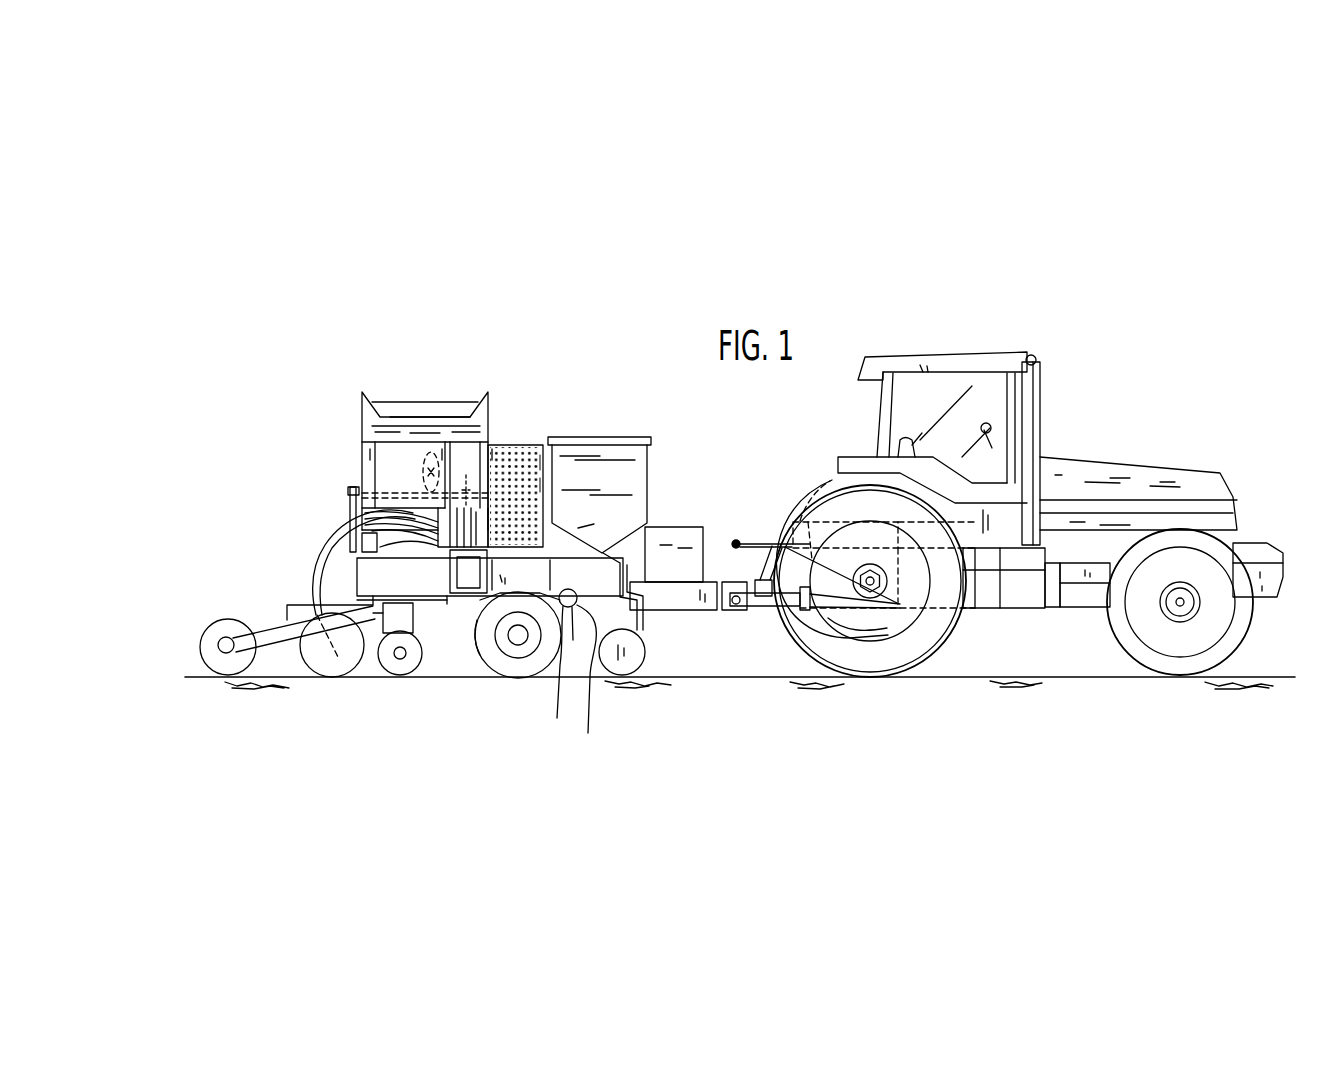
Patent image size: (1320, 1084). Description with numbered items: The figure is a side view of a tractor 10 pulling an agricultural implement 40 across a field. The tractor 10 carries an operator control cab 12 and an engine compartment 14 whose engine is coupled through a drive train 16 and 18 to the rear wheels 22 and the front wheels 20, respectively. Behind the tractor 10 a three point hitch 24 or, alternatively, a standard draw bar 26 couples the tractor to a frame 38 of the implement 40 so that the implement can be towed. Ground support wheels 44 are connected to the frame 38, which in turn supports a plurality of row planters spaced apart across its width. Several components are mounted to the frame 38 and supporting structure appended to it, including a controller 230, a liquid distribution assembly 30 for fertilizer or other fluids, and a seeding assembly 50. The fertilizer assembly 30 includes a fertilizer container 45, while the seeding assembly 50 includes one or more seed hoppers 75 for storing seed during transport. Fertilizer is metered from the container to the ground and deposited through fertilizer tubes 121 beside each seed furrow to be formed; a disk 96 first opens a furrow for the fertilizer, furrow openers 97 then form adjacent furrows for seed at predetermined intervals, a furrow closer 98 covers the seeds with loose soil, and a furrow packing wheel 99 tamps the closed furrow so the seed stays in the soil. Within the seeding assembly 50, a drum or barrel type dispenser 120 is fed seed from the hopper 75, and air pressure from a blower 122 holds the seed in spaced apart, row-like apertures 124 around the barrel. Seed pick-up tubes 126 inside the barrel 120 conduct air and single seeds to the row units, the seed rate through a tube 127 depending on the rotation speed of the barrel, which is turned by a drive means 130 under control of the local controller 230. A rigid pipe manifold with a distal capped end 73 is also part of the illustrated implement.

The tractor 10 is at (1072, 453).
The operator control cab 12 is at (960, 358).
The engine compartment 14 is at (1118, 525).
The drive train 16 is at (897, 557).
The drive train 18 is at (1082, 605).
The front wheels 20 is at (1245, 628).
The rear wheels 22 is at (935, 633).
The three point hitch 24 is at (757, 543).
The draw bar 26 is at (815, 618).
The liquid distribution assembly 30 is at (615, 414).
The frame 38 is at (463, 594).
The agricultural implement 40 is at (398, 390).
The ground support wheels 44 is at (484, 640).
The fertilizer container 45 is at (618, 447).
The seeding assembly 50 is at (462, 397).
The distal capped end 73 is at (594, 686).
The seed hopper 75 is at (433, 410).
The disk 96 is at (645, 655).
The furrow openers 97 is at (403, 664).
The furrow closer 98 is at (330, 670).
The furrow packing wheel 99 is at (208, 633).
The barrel type dispenser 120 is at (505, 444).
The fertilizer tubes 121 is at (553, 668).
The blower 122 is at (420, 485).
The apertures 124 is at (529, 456).
The seed pick-up tubes 126 is at (468, 476).
The tube 127 is at (306, 556).
The drive means 130 is at (378, 545).
The controller 230 is at (681, 527).